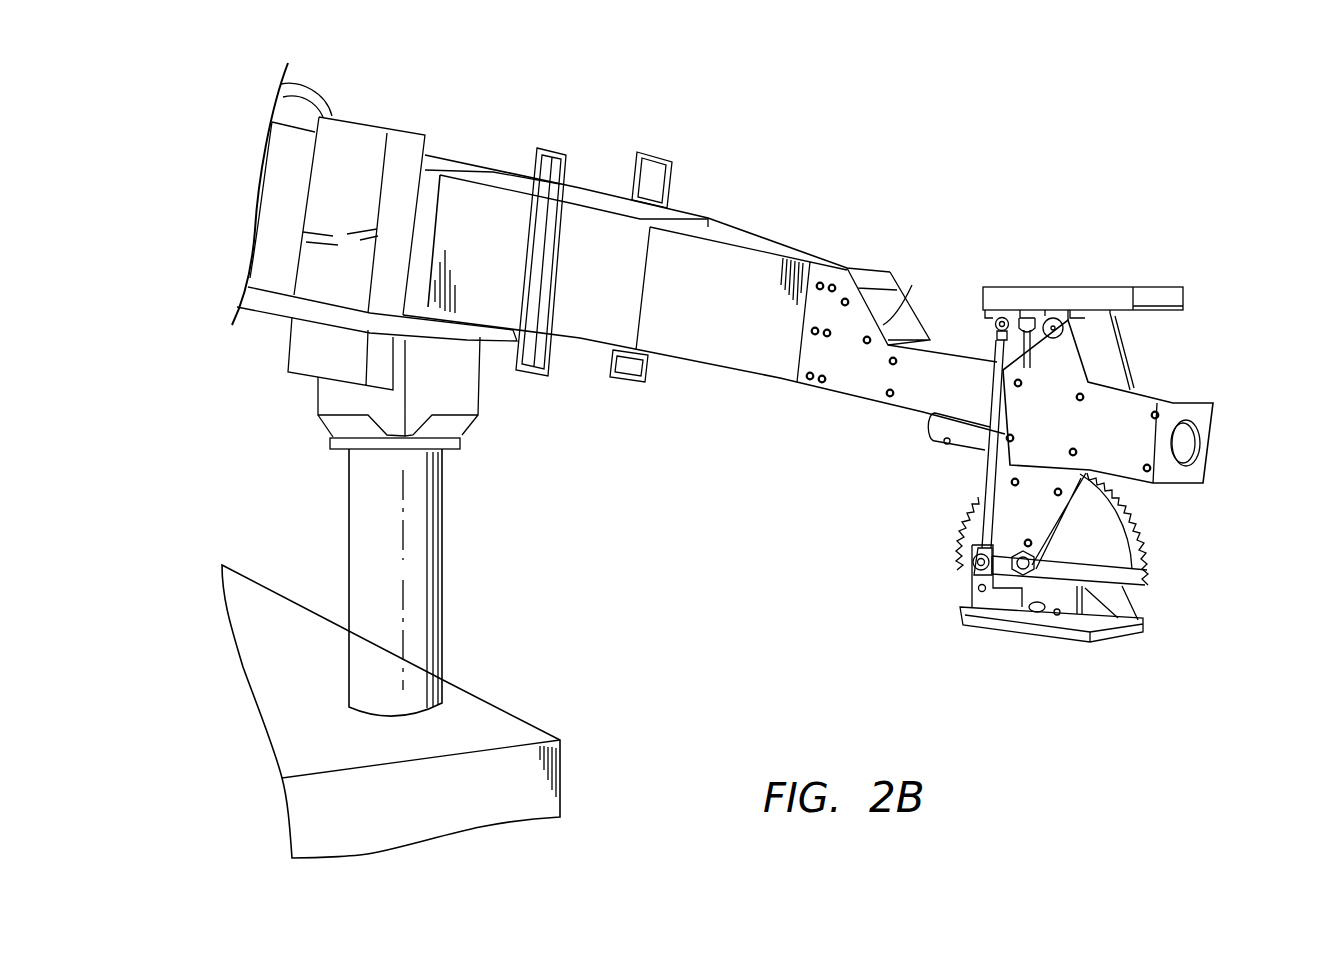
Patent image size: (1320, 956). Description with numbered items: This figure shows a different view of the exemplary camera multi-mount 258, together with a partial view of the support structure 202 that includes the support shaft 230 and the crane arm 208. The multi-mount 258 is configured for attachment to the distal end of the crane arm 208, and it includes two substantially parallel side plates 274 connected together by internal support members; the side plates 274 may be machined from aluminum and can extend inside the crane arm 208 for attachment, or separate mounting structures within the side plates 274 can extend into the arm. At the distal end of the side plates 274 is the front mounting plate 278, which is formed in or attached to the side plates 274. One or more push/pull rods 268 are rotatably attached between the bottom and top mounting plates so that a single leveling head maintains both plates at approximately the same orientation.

The support structure 202 is at (156, 80).
The crane arm 208 is at (673, 215).
The support shaft 230 is at (349, 545).
The camera multi-mount 258 is at (1013, 182).
The push/pull rods 268 is at (987, 468).
The side plates 274 is at (907, 323).
The front mounting plate 278 is at (1208, 413).